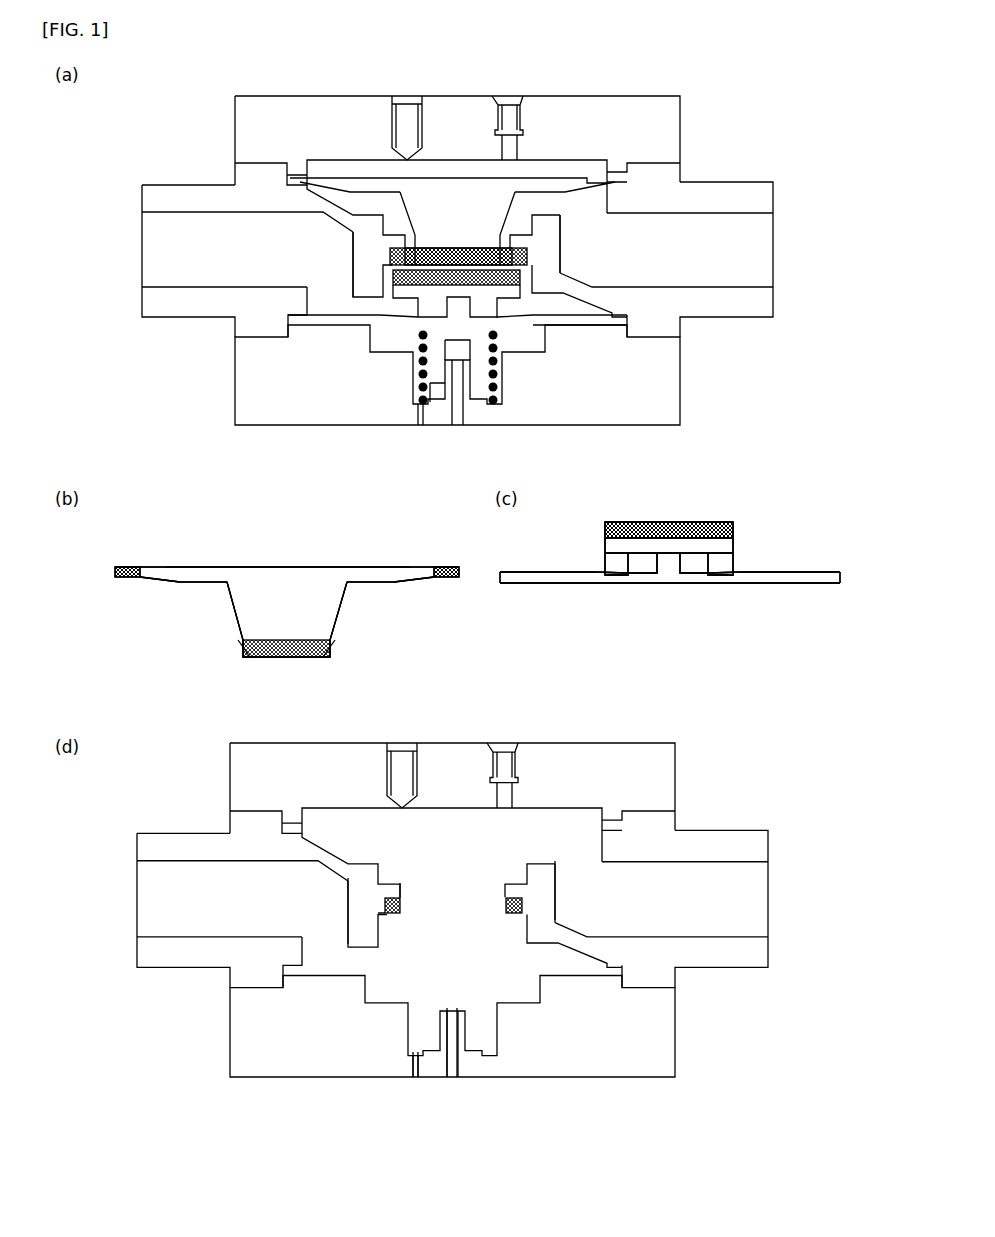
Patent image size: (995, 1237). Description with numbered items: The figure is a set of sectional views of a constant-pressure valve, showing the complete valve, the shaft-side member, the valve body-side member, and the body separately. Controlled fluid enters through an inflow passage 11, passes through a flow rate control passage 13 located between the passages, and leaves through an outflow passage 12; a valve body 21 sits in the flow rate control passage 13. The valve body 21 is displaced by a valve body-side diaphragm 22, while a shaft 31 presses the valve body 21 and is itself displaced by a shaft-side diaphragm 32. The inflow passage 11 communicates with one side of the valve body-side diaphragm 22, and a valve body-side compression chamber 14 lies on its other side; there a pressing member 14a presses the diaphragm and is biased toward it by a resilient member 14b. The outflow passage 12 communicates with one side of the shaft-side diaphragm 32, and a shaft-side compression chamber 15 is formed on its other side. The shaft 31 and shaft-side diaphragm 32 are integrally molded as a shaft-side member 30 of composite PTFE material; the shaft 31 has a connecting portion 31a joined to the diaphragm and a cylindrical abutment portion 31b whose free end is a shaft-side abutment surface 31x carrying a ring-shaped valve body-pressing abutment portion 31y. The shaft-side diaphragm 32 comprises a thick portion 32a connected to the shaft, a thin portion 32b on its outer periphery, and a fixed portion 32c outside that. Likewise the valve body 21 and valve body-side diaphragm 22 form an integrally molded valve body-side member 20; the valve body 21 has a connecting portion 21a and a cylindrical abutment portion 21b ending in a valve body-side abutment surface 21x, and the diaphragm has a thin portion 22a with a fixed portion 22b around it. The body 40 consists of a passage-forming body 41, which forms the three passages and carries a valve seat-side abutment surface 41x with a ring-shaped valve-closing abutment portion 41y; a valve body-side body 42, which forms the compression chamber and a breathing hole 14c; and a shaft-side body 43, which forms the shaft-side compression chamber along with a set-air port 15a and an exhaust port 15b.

The inflow passage 11 is at (160, 252).
The outflow passage 12 is at (770, 252).
The flow rate control passage 13 is at (383, 283).
The valve body-side compression chamber 14 is at (293, 403).
The pressing member 14a is at (417, 358).
The resilient member 14b is at (445, 342).
The breathing hole 14c is at (448, 1080).
The shaft-side compression chamber 15 is at (310, 163).
The set-air port 15a is at (506, 701).
The exhaust port 15b is at (406, 701).
The valve body-side member 20 is at (793, 535).
The valve body 21 is at (507, 290).
The connecting portion 21a is at (594, 538).
The abutment portion 21b is at (594, 522).
The valve body-side abutment surface 21x is at (670, 521).
The valve body-side diaphragm 22 is at (517, 323).
The thin portion 22a is at (747, 591).
The fixed portion 22b is at (593, 591).
The shaft-side member 30 is at (124, 605).
The shaft 31 is at (505, 200).
The connecting portion 31a is at (222, 597).
The abutment portion 31b is at (222, 633).
The shaft-side abutment surface 31x is at (287, 657).
The valve body-pressing abutment portion 31y is at (243, 657).
The shaft-side diaphragm 32 is at (588, 182).
The thick portion 32a is at (410, 561).
The thin portion 32b is at (167, 561).
The fixed portion 32c is at (125, 567).
The body 40 is at (443, 862).
The passage-forming body 41 is at (436, 834).
The valve seat-side abutment surface 41x is at (388, 917).
The valve-closing abutment portion 41y is at (383, 913).
The valve body-side body 42 is at (418, 1005).
The shaft-side body 43 is at (418, 769).